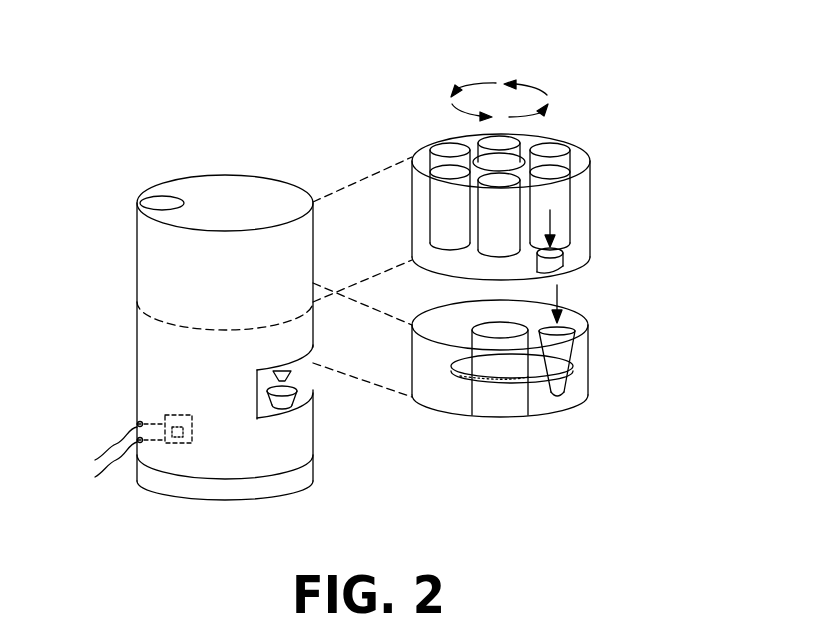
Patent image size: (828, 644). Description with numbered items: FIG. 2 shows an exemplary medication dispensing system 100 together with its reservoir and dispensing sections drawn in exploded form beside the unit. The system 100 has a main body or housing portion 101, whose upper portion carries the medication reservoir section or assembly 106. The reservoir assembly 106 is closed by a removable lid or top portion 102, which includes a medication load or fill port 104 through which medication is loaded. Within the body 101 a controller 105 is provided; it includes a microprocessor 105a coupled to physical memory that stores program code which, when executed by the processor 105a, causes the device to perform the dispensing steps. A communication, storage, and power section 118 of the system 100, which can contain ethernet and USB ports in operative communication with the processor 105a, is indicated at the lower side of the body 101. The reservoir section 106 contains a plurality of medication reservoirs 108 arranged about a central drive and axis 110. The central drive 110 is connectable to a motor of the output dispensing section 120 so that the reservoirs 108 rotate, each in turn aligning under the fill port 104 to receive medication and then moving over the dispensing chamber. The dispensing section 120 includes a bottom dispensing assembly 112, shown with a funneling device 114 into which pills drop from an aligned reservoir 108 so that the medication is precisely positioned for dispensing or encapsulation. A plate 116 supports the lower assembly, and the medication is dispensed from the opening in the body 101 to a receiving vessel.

The dispensing system 100 is at (246, 134).
The main body or housing portion 101 is at (157, 282).
The removable lid or top portion 102 is at (272, 205).
The medication load or fill port 104 is at (166, 200).
The controller 105 is at (183, 412).
The microprocessor 105a is at (183, 432).
The medication reservoir section or assembly 106 is at (562, 131).
The medication reservoirs 108 is at (447, 150).
The central drive and axis 110 is at (458, 160).
The bottom dispensing assembly 112 is at (589, 306).
The funneling device 114 is at (538, 272).
The plate 116 is at (513, 383).
The communication, storage, and power section 118 is at (131, 450).
The output dispensing section 120 is at (285, 410).